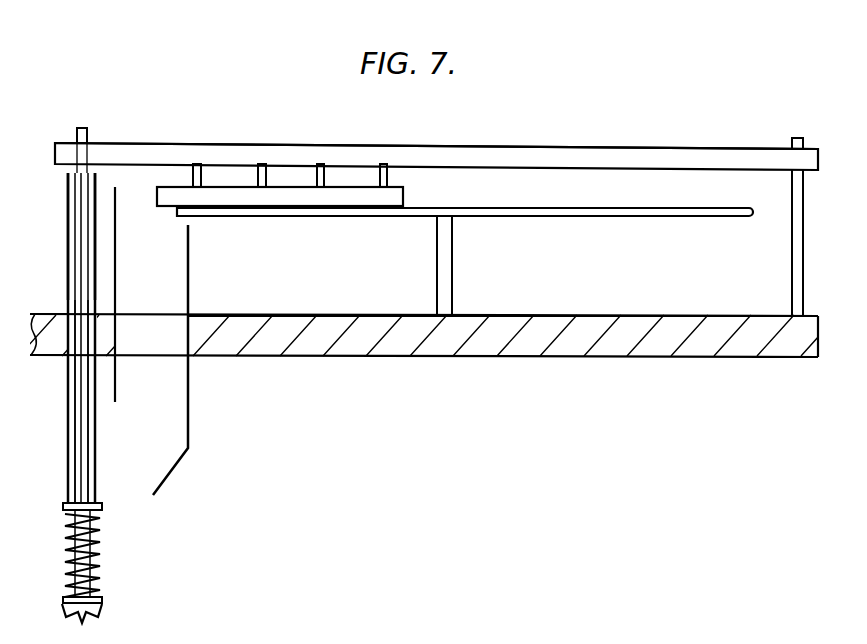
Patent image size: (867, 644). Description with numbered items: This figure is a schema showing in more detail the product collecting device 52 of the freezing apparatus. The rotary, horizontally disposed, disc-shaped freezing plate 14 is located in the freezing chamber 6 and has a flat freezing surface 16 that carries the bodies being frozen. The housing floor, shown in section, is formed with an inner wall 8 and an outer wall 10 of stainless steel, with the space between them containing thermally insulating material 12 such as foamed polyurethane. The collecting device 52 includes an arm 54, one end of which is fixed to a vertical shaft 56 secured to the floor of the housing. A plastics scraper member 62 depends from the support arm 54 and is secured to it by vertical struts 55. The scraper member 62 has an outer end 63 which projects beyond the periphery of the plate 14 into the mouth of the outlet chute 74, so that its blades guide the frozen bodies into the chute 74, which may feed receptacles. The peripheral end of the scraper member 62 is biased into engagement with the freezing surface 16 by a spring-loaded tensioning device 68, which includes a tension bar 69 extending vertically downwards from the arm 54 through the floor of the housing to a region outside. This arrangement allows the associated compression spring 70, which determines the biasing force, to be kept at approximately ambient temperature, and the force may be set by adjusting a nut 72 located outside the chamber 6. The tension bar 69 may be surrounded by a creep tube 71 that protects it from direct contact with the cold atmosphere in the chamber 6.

The freezing chamber 6 is at (306, 288).
The inner wall 8 is at (52, 312).
The outer wall 10 is at (553, 358).
The thermally insulating material 12 is at (655, 340).
The freezing plate 14 is at (630, 224).
The freezing surface 16 is at (650, 210).
The collecting device 52 is at (172, 140).
The arm 54 is at (302, 146).
The vertical struts 55 is at (258, 184).
The vertical shaft 56 is at (790, 282).
The scraper member 62 is at (414, 203).
The outer end 63 is at (156, 206).
The spring-loaded tensioning device 68 is at (64, 450).
The tension bar 69 is at (68, 188).
The compression spring 70 is at (104, 575).
The creep tube 71 is at (68, 418).
The nut 72 is at (100, 617).
The outlet chute 74 is at (196, 428).